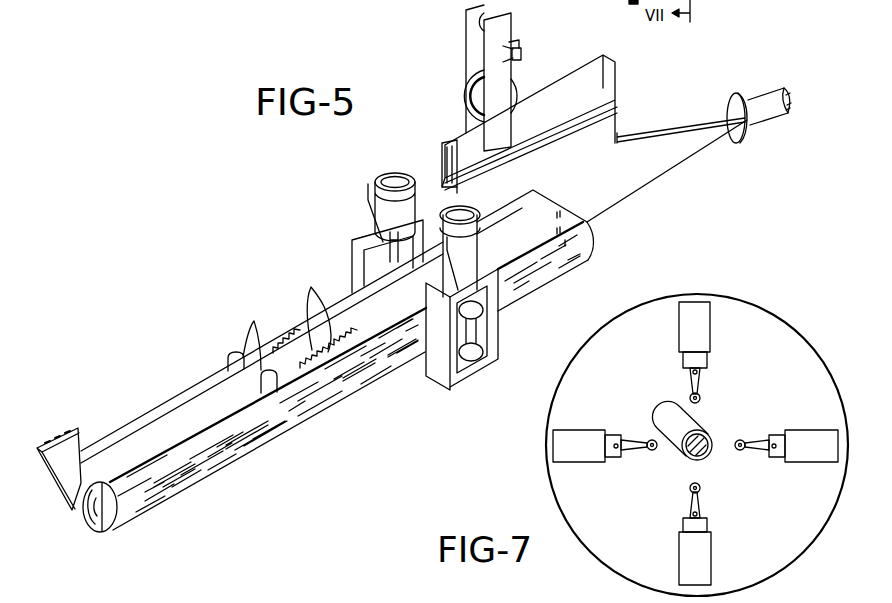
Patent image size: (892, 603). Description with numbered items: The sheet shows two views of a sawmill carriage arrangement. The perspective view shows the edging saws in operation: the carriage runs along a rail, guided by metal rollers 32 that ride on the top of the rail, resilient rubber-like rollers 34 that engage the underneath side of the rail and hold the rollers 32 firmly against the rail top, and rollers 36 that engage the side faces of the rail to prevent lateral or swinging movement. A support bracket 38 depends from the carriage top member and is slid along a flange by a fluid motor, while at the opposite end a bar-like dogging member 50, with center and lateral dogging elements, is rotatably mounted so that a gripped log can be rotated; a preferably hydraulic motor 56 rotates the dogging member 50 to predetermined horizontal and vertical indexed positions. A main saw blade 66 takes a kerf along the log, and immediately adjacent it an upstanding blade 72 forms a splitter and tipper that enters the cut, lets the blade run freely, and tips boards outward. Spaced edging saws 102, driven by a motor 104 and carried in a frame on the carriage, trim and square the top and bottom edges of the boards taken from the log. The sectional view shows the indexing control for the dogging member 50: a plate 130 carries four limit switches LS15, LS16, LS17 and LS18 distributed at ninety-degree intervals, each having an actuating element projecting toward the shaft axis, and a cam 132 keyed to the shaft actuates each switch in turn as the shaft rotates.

In FIG. 5, the rollers 32 is at (478, 24).
In FIG. 5, the rollers 34 is at (470, 101).
In FIG. 5, the rollers 36 is at (524, 52).
In FIG. 5, the support bracket 38 is at (64, 461).
In FIG. 5, the dogging member 50 is at (595, 238).
In FIG. 5, the motor 56 is at (786, 95).
In FIG. 5, the main saw blade 66 is at (315, 326).
In FIG. 5, the upstanding blade 72 is at (252, 346).
In FIG. 5, the edging saws 102 is at (372, 262).
In FIG. 5, the motor 104 is at (380, 184).
In FIG. 7, the plate 130 is at (803, 530).
In FIG. 7, the cam 132 is at (669, 410).
In FIG. 7, the limit switch LS15 is at (700, 340).
In FIG. 7, the limit switch LS16 is at (700, 555).
In FIG. 7, the limit switch LS17 is at (586, 437).
In FIG. 7, the limit switch LS18 is at (810, 435).